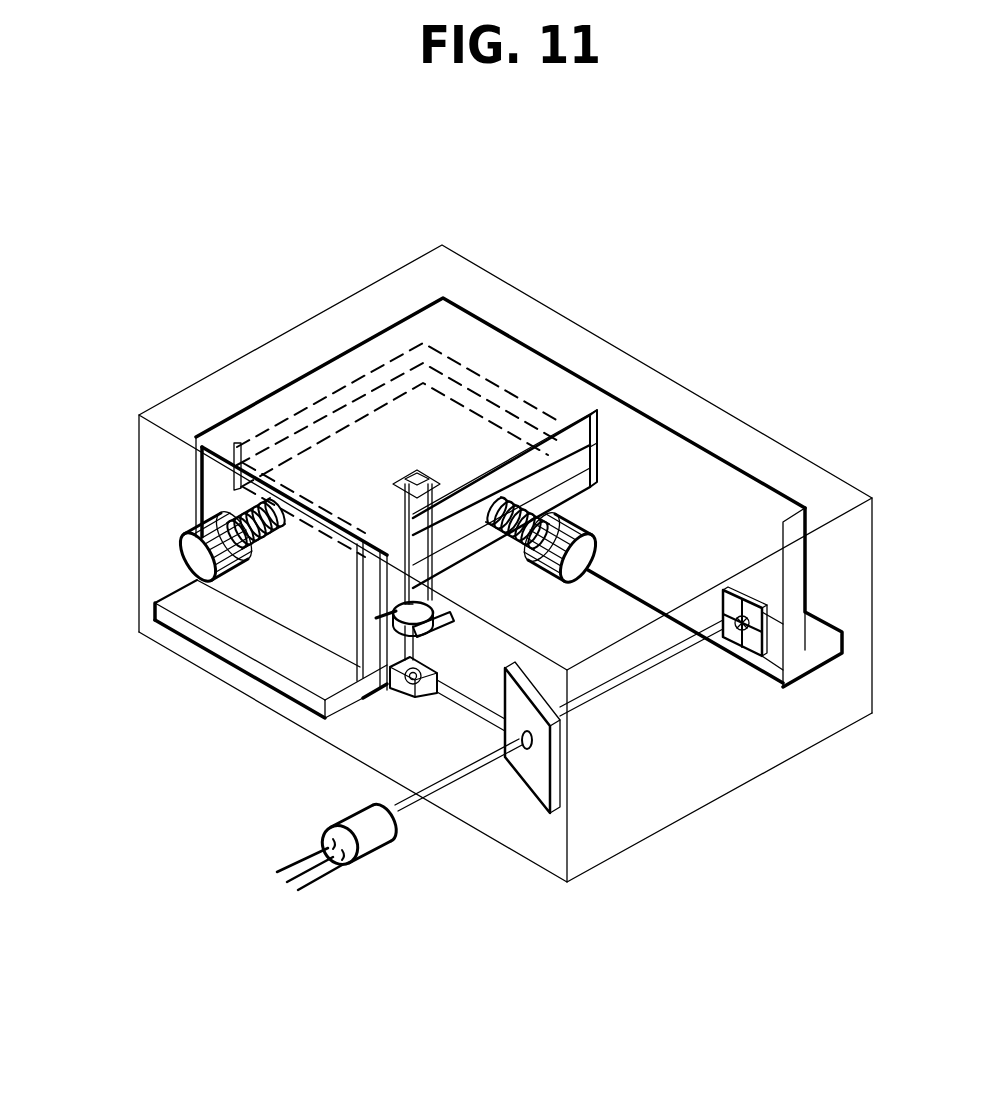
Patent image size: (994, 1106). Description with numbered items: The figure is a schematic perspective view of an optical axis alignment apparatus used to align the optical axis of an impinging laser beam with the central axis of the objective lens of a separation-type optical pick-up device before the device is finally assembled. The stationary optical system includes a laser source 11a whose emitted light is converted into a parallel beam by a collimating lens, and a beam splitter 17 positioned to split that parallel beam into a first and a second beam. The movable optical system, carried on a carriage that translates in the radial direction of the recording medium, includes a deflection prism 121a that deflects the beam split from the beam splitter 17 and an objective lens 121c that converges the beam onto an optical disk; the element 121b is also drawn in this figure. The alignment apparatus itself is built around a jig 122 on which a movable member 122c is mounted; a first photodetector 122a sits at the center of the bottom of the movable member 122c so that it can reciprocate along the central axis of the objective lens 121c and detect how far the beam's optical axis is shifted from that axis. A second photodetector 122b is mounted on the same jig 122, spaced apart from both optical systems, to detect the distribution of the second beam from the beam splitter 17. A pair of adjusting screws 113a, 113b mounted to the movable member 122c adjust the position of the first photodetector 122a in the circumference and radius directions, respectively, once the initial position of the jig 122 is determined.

The jig 122 is at (502, 345).
The first photodetector 122a is at (434, 515).
The second photodetector 122b is at (742, 657).
The movable member 122c is at (540, 490).
The deflection prism 121a is at (370, 703).
The bracket bottom plate 121b is at (327, 700).
The objective lens 121c is at (413, 636).
The adjusting screw 113a is at (203, 563).
The adjusting screw 113b is at (593, 540).
The beam splitter 17 is at (537, 800).
The laser source 11a is at (378, 855).